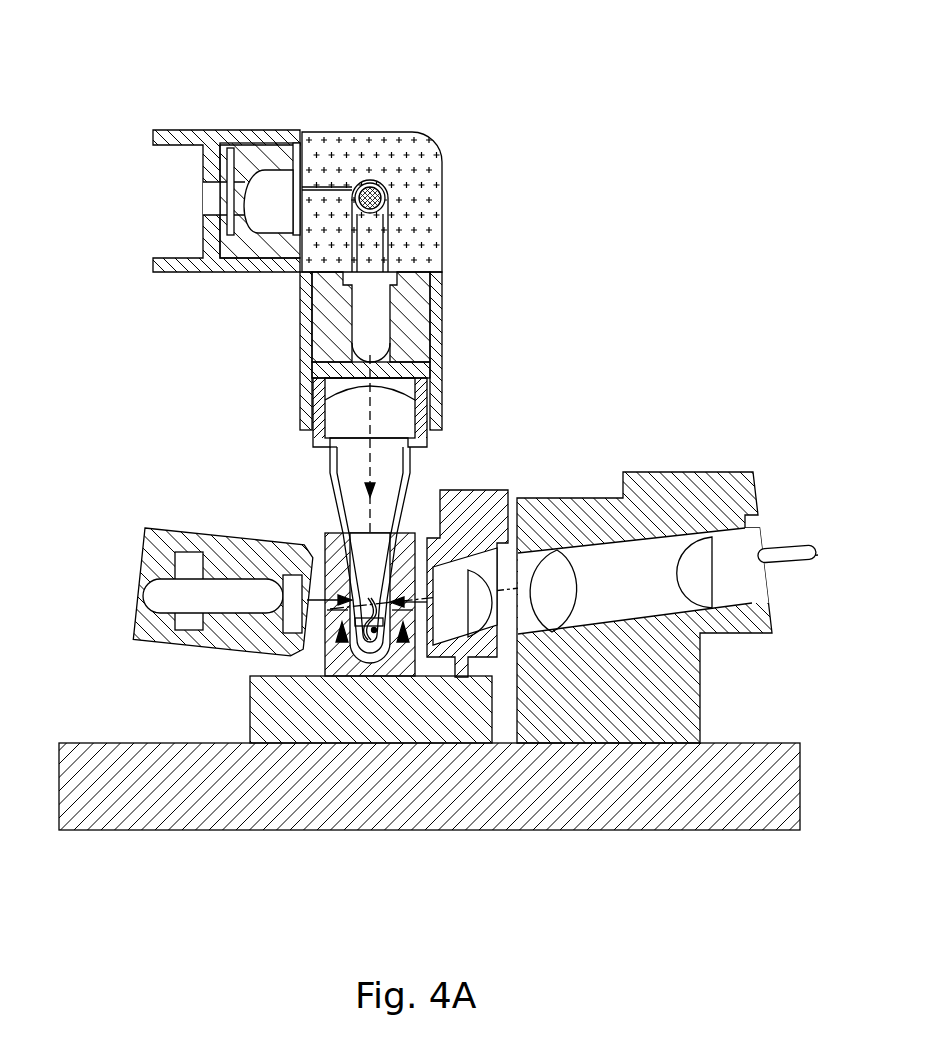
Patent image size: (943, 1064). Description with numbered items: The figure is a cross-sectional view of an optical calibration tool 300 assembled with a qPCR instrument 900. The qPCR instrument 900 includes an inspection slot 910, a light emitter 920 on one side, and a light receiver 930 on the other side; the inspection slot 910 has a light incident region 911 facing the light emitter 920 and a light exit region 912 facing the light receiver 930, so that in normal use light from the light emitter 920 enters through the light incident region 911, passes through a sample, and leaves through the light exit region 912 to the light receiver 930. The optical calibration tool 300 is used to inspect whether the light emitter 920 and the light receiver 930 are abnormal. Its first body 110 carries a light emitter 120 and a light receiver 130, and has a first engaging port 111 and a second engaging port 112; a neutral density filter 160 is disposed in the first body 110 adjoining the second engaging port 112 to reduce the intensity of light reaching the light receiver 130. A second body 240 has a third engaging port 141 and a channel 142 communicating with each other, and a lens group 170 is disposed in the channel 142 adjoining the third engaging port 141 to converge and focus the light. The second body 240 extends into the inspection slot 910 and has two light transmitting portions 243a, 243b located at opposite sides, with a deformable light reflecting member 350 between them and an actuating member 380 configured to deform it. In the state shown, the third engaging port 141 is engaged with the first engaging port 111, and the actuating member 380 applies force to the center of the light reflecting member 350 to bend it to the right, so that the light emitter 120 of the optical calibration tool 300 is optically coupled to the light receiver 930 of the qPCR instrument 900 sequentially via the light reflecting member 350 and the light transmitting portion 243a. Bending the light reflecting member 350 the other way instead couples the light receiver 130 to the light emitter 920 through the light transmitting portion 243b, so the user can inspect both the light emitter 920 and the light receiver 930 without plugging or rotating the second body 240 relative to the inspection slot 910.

The second engaging port 112 is at (188, 125).
The light receiver 130 is at (275, 183).
The optical calibration tool 300 is at (488, 125).
The first body 110 is at (415, 225).
The light emitter 120 is at (377, 325).
The neutral density filter 160 is at (240, 236).
The first engaging port 111 is at (442, 387).
The lens group 170 is at (345, 420).
The third engaging port 141 is at (432, 422).
The channel 142 is at (323, 462).
The second body 240 is at (405, 458).
The qPCR instrument 900 is at (104, 478).
The light transmitting portion 243a is at (427, 602).
The light transmitting portion 243b is at (307, 600).
The light reflecting member 350 is at (367, 600).
The actuating member 380 is at (378, 634).
The inspection slot 910 is at (372, 666).
The light incident region 911 is at (342, 640).
The light exit region 912 is at (405, 640).
The light emitter 920 is at (227, 597).
The light receiver 930 is at (735, 580).